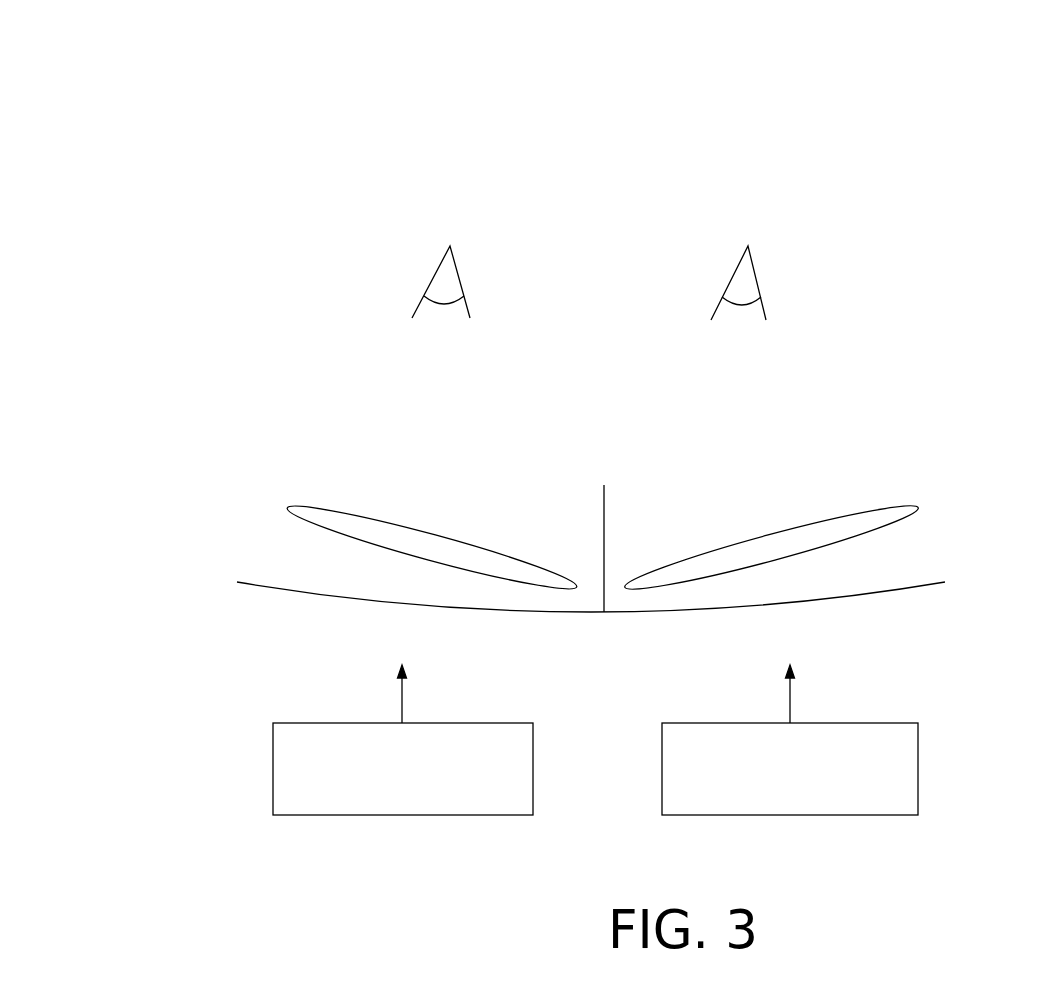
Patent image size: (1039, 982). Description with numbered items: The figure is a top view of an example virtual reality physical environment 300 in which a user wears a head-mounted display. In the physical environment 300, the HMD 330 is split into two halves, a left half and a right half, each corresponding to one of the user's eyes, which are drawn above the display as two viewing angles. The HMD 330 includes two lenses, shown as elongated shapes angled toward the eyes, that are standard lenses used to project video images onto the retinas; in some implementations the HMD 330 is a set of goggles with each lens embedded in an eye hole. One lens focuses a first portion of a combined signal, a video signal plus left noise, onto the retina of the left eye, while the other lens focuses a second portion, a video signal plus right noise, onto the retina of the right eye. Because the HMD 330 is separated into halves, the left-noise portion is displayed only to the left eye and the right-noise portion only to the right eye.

The VR physical environment 300 is at (178, 68).
The HMD 330 is at (854, 612).